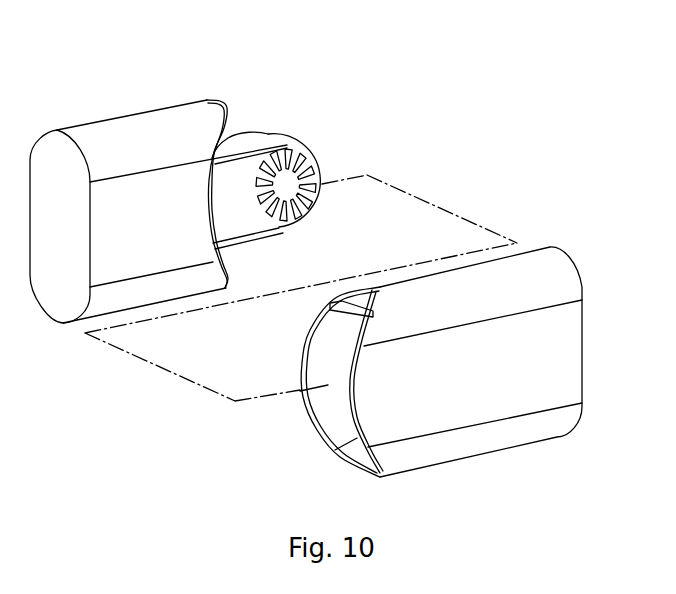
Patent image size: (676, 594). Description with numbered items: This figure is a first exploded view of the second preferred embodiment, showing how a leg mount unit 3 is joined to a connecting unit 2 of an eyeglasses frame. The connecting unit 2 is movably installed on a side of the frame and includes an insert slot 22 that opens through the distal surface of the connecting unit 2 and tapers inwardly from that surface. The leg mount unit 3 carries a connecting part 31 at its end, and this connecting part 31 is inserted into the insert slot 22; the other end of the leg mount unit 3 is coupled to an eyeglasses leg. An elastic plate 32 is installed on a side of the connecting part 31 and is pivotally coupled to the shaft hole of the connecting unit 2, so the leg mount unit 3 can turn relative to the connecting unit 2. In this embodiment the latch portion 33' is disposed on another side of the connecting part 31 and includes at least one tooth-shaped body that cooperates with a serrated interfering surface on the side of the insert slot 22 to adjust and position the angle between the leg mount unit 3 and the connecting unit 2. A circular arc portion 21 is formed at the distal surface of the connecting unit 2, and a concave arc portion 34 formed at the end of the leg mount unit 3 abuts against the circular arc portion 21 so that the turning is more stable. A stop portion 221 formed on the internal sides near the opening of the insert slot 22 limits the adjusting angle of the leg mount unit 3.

The connecting unit 2 is at (582, 244).
The circular arc portion 21 is at (355, 407).
The insert slot 22 is at (332, 420).
The stop portion 221 is at (352, 453).
The leg mount unit 3 is at (150, 95).
The connecting part 31 is at (243, 232).
The elastic plate 32 is at (257, 132).
The latch portion 33' is at (321, 141).
The concave arc portion 34 is at (234, 150).